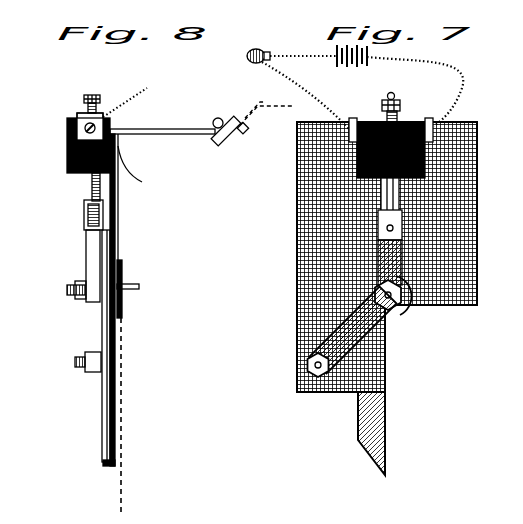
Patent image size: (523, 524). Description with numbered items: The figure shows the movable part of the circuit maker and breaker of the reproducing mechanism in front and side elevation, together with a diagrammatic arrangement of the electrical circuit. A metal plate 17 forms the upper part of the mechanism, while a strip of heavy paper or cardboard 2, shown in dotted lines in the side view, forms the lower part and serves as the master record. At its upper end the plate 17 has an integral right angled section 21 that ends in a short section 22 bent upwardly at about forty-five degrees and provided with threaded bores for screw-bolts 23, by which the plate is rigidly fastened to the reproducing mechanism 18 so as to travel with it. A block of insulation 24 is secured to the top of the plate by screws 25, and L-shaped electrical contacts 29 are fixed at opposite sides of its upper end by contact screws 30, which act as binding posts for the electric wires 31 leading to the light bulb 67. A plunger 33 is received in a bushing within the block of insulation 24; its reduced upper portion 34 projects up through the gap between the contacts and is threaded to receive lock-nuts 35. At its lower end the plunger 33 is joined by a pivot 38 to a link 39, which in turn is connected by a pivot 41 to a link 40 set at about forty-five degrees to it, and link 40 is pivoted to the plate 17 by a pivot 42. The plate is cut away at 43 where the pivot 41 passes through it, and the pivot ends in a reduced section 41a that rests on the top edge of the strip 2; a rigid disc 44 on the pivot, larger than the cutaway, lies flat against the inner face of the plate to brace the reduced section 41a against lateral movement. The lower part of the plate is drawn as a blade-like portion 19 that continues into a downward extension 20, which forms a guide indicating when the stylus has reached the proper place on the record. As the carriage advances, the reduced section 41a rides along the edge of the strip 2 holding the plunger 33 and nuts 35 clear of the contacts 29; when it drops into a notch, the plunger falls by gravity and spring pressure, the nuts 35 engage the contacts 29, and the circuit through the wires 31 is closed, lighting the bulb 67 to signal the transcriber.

In FIG. 8, the strip of paper 2 is at (126, 380).
In FIG. 8, the plate 17 is at (117, 226).
In FIG. 7, the plate 17 is at (297, 255).
In FIG. 8, the reproducing mechanism 18 is at (262, 102).
In FIG. 7, the blade 19 is at (386, 388).
In FIG. 7, the downward extension 20 is at (360, 424).
In FIG. 8, the right angled section 21 is at (184, 136).
In FIG. 8, the short section 22 is at (228, 122).
In FIG. 8, the screw-bolts 23 is at (215, 119).
In FIG. 8, the block of insulation 24 is at (67, 148).
In FIG. 7, the block of insulation 24 is at (430, 150).
In FIG. 8, the screws 25 is at (128, 172).
In FIG. 8, the L-shaped electrical contacts 29 is at (78, 115).
In FIG. 7, the L-shaped electrical contacts 29 is at (422, 120).
In FIG. 7, the contact screws 30 is at (348, 142).
In FIG. 8, the electric wires 31 is at (143, 93).
In FIG. 7, the electric wires 31 is at (462, 82).
In FIG. 8, the plunger 33 is at (84, 188).
In FIG. 7, the plunger 33 is at (400, 192).
In FIG. 8, the reduced upper portion 34 is at (88, 95).
In FIG. 7, the reduced upper portion 34 is at (387, 96).
In FIG. 8, the lock-nuts 35 is at (98, 105).
In FIG. 7, the lock-nuts 35 is at (404, 107).
In FIG. 8, the pivot 38 is at (84, 214).
In FIG. 7, the pivot 38 is at (402, 224).
In FIG. 8, the link 39 is at (86, 251).
In FIG. 7, the link 39 is at (402, 256).
In FIG. 8, the link 40 is at (100, 328).
In FIG. 7, the link 40 is at (322, 330).
In FIG. 8, the pivot 41 is at (67, 286).
In FIG. 7, the pivot 41 is at (350, 312).
In FIG. 8, the reduced section 41a is at (139, 287).
In FIG. 8, the pivot 42 is at (75, 364).
In FIG. 7, the pivot 42 is at (306, 372).
In FIG. 7, the cutaway portion 43 is at (406, 290).
In FIG. 8, the rigid disc 44 is at (122, 268).
In FIG. 7, the rigid disc 44 is at (402, 312).
In FIG. 7, the light bulb 67 is at (246, 57).